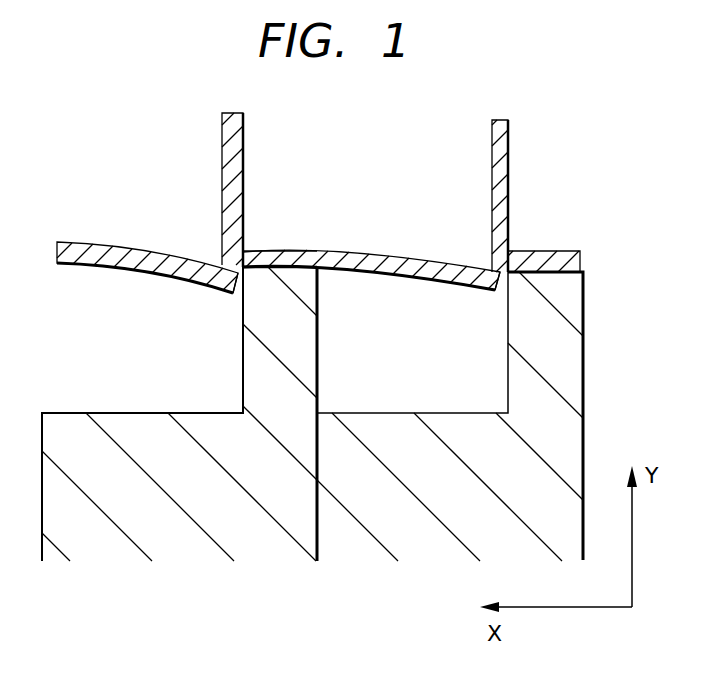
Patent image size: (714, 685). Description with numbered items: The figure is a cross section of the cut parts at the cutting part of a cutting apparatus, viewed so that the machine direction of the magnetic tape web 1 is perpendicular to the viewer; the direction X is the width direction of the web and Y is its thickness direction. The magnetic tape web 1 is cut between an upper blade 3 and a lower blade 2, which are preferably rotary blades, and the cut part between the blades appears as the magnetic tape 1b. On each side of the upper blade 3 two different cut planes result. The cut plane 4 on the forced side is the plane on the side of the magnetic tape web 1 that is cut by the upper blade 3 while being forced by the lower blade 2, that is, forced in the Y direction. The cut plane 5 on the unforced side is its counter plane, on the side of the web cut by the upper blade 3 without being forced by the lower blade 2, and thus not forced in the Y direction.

The magnetic tape web 1 is at (89, 245).
The magnetic tape 1b is at (380, 252).
The lower blade 2 is at (298, 353).
The upper blade 3 is at (233, 138).
The cut plane on the forced side 4 is at (255, 252).
The cut plane on the unforced side 5 is at (238, 290).